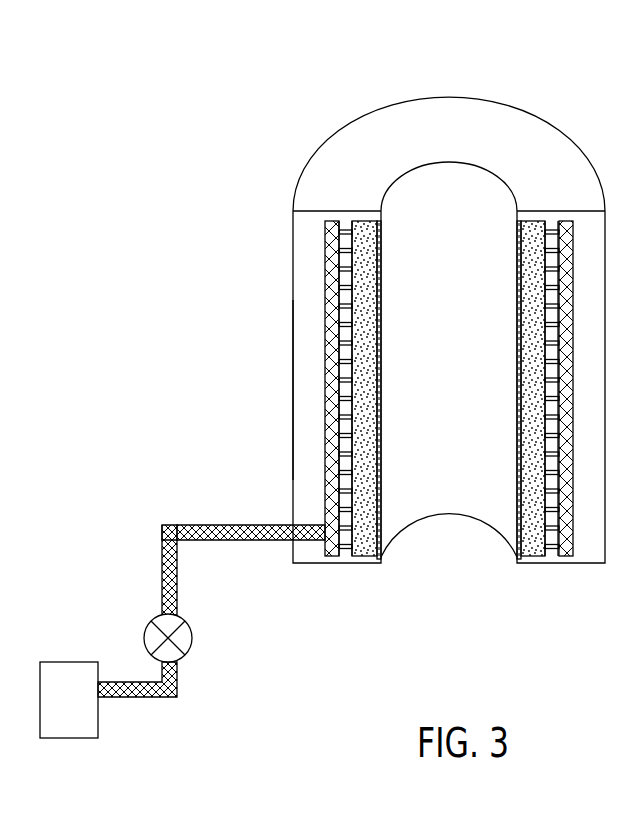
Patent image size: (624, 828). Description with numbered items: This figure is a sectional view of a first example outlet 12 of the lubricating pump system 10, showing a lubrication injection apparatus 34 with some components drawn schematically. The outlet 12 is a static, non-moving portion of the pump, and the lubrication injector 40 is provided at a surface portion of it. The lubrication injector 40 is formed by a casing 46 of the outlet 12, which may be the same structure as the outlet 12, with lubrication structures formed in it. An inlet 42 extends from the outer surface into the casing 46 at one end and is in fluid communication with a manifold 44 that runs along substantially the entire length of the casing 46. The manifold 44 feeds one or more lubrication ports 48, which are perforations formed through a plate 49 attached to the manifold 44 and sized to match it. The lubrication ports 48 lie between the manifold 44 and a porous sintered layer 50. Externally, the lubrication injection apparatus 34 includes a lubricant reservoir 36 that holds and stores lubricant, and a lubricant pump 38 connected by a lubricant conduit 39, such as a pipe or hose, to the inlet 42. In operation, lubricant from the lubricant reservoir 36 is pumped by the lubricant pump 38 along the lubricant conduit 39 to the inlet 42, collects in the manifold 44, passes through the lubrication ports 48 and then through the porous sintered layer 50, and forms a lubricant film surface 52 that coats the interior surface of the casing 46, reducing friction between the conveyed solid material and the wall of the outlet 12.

The lubricating pump system 10 is at (358, 65).
The outlet 12 is at (295, 129).
The lubrication injection apparatus 34 is at (153, 436).
The lubricant reservoir 36 is at (98, 727).
The lubricant pump 38 is at (193, 643).
The lubricant conduit 39 is at (222, 542).
The lubrication injector 40 is at (266, 241).
The inlet 42 is at (291, 523).
The manifold 44 is at (325, 302).
The casing 46 is at (293, 390).
The lubrication ports 48 is at (345, 557).
The plate 49 is at (350, 386).
The porous sintered layer 50 is at (362, 557).
The lubricant film surface 52 is at (380, 505).